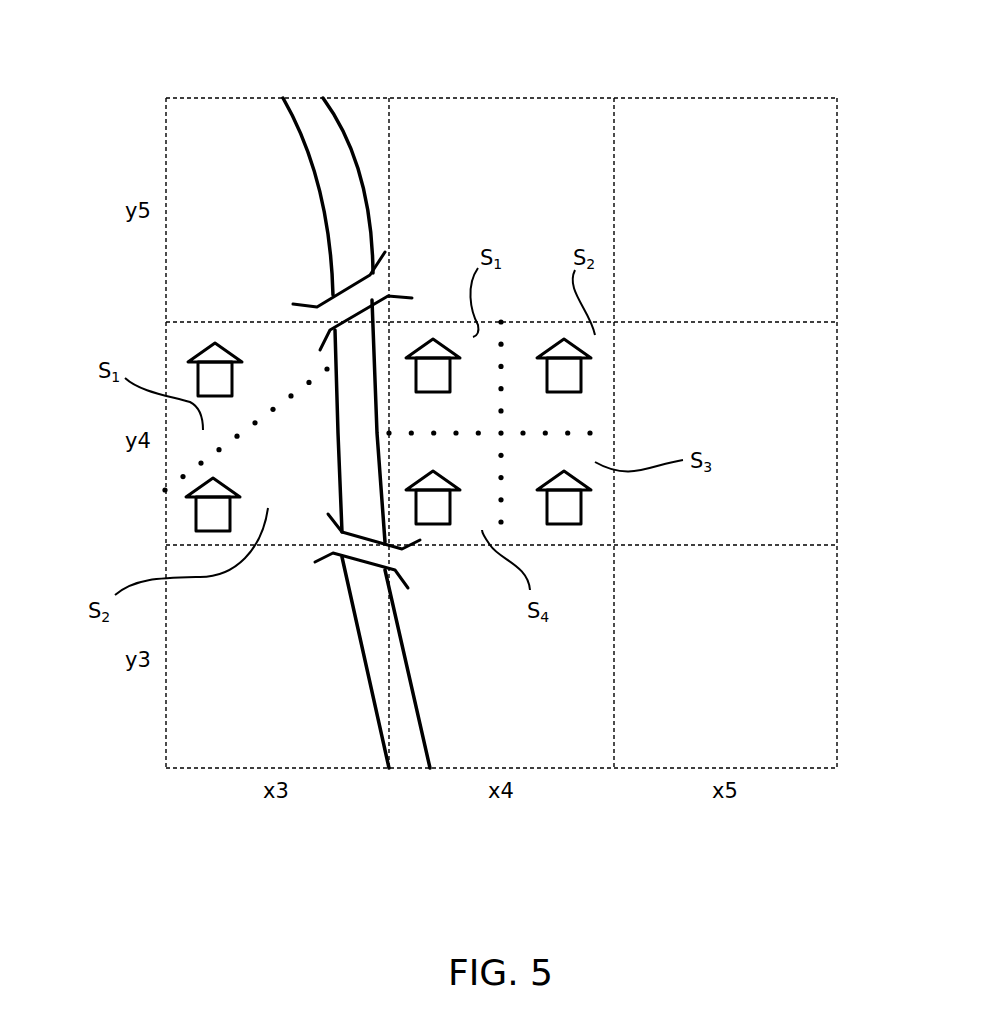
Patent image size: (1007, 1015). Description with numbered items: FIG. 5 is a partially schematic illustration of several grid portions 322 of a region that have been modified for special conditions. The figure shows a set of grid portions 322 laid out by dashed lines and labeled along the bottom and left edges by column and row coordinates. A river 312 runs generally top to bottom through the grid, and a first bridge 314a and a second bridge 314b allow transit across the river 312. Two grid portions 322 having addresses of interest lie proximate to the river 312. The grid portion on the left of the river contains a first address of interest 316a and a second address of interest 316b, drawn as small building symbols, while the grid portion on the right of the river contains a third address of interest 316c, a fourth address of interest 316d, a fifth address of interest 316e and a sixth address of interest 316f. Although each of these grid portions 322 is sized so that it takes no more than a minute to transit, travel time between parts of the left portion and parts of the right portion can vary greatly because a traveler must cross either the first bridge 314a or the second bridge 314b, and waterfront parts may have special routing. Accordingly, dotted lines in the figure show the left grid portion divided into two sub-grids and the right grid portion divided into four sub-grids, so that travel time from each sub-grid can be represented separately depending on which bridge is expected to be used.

The river 312 is at (347, 128).
The first bridge 314a is at (370, 560).
The second bridge 314b is at (349, 300).
The first address of interest 316a is at (203, 522).
The second address of interest 316b is at (210, 383).
The third address of interest 316c is at (437, 510).
The fourth address of interest 316d is at (577, 505).
The fifth address of interest 316e is at (577, 376).
The sixth address of interest 316f is at (441, 350).
The grid portions 322 is at (672, 48).